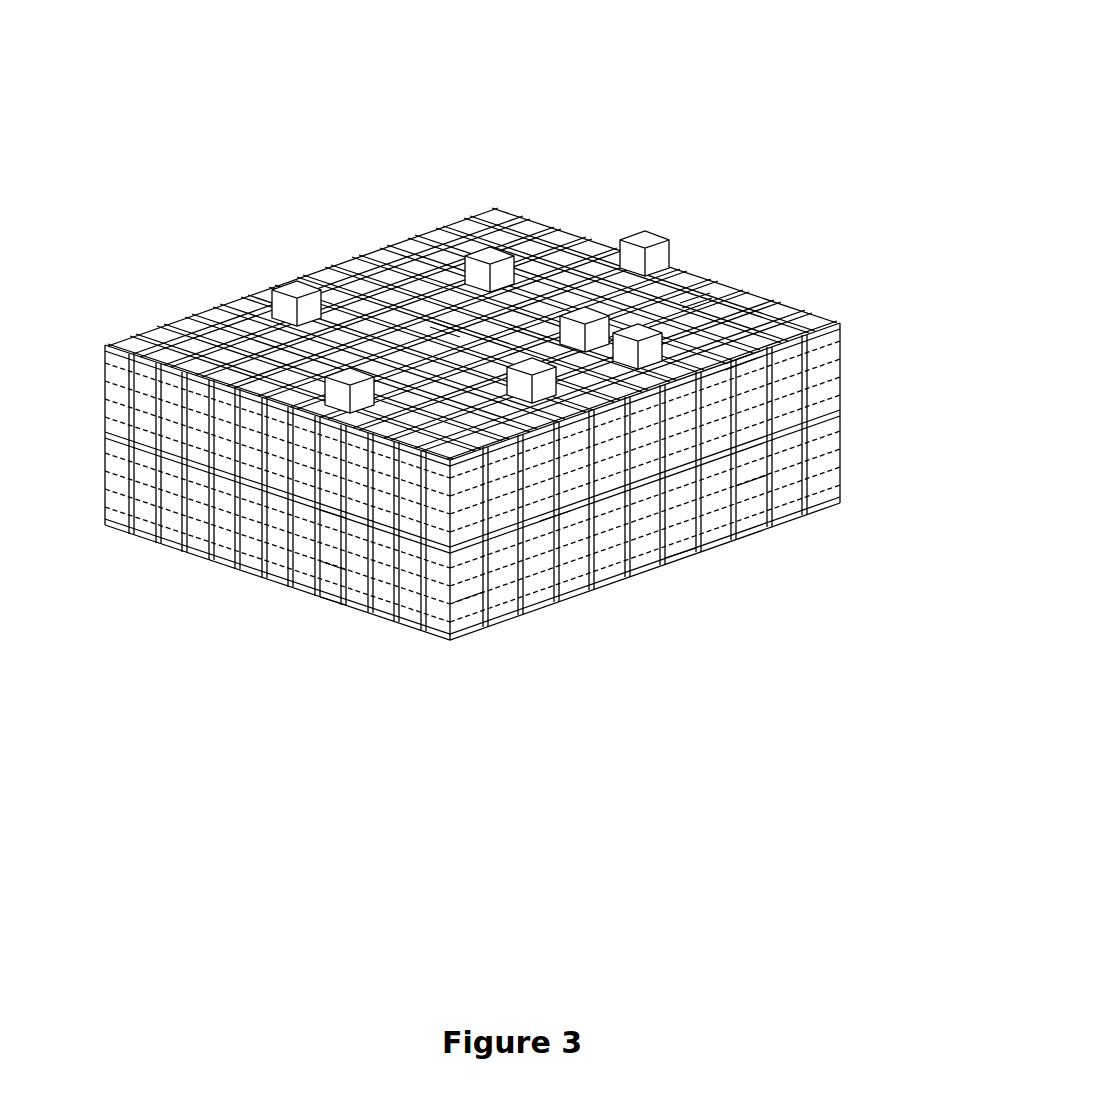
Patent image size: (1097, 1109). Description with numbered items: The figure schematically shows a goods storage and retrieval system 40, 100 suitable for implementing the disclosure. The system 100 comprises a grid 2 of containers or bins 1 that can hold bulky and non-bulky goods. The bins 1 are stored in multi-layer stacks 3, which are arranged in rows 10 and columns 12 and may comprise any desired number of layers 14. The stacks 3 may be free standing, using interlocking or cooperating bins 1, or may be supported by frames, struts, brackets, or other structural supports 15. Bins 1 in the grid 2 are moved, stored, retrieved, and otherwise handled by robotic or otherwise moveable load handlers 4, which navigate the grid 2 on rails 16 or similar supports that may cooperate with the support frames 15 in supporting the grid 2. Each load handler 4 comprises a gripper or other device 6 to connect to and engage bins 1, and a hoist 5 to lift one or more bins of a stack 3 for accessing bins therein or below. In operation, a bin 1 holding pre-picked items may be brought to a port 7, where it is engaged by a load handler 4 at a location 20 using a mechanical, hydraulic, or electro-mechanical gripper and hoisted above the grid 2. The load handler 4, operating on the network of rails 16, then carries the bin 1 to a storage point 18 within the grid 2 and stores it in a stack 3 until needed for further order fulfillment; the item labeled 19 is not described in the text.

The goods storage and retrieval system 40 is at (504, 388).
The goods storage and retrieval system 100 is at (504, 419).
The grid 2 is at (571, 233).
The load handler 4 is at (649, 250).
The rails 16 is at (695, 298).
The storage point 18 is at (741, 330).
The rail 19 is at (447, 327).
The columns 12 is at (500, 344).
The rows 10 is at (506, 548).
The location 20 is at (340, 412).
The hoist 5 is at (333, 518).
The gripper 6 is at (338, 568).
The port 7 is at (333, 602).
The bin 1 is at (467, 603).
The structural supports 15 is at (555, 510).
The stacks 3 is at (677, 557).
The layers 14 is at (753, 475).